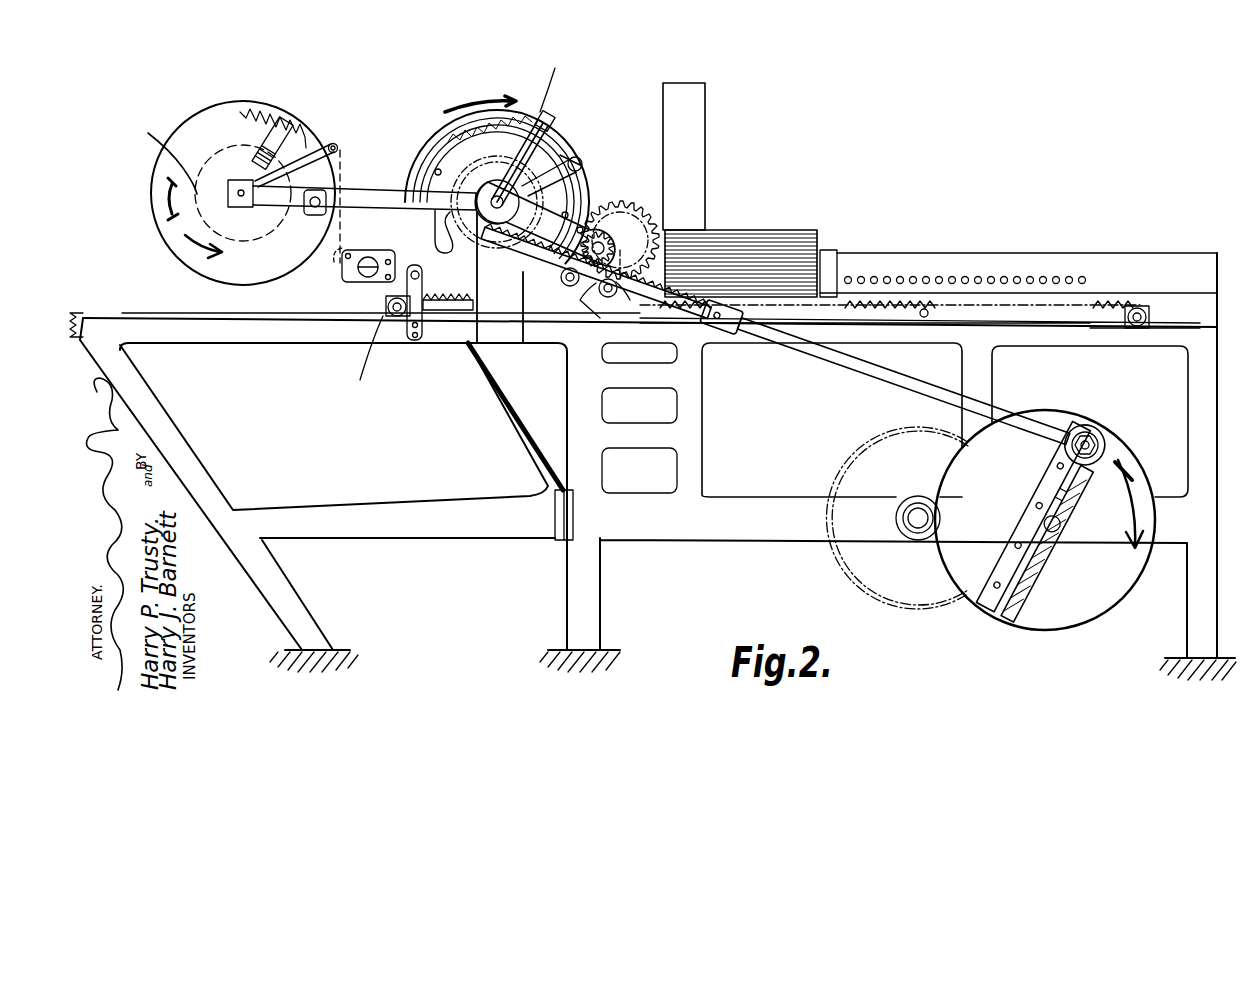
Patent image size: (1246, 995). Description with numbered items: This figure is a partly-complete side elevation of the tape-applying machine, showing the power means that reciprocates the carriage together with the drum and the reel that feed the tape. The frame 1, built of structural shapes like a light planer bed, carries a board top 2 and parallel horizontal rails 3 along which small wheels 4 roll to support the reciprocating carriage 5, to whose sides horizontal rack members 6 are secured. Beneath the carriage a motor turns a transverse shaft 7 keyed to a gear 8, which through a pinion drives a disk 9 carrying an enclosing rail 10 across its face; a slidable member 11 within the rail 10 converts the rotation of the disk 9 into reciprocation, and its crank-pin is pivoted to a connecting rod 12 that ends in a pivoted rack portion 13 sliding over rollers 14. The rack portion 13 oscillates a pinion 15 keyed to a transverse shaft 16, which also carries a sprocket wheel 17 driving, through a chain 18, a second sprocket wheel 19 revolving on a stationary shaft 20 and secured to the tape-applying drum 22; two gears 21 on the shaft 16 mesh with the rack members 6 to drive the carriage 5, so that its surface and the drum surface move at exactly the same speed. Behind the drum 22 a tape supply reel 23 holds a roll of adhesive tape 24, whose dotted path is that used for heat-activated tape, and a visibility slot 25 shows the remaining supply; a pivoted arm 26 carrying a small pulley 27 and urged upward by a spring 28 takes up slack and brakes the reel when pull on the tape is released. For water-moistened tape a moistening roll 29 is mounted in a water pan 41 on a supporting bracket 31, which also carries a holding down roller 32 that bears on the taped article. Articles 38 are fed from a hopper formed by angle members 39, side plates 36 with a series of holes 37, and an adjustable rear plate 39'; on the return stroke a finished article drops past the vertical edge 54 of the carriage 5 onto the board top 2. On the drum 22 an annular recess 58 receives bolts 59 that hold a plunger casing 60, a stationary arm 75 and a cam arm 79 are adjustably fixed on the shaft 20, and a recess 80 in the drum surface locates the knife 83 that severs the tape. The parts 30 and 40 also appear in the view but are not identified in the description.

The frame 1 is at (310, 340).
The board top 2 is at (90, 312).
The horizontal rails 3 is at (272, 312).
The small wheels 4 is at (392, 318).
The reciprocating carriage 5 is at (1148, 312).
The rack members 6 is at (1125, 305).
The transverse shaft 7 is at (925, 540).
The gear 8 is at (836, 578).
The disk 9 is at (1055, 630).
The enclosing rail 10 is at (1005, 528).
The slidable member 11 is at (1060, 500).
The connecting rod 12 is at (812, 348).
The pivoted rack portion 13 is at (603, 297).
The rollers 14 is at (566, 286).
The pinion 15 is at (622, 235).
The transverse shaft 16 is at (574, 268).
The sprocket wheel 17 is at (608, 236).
The chain 18 is at (545, 265).
The second sprocket wheel 19 is at (430, 135).
The stationary shaft 20 is at (485, 192).
The gears 21 is at (636, 222).
The tape-applying drum 22 is at (540, 120).
The tape supply reel 23 is at (200, 108).
The adhesive tape 24 is at (160, 145).
The visibility slot 25 is at (290, 120).
The pivoted arm 26 is at (330, 144).
The small pulley 27 is at (338, 148).
The spring 28 is at (258, 110).
The moistening roll 29 is at (368, 257).
The housing 30 is at (330, 266).
The supporting bracket 31 is at (416, 342).
The holding down roller 32 is at (440, 296).
The side plates 36 is at (905, 253).
The holes 37 is at (1085, 276).
The article 38 is at (762, 232).
The angle members 39 is at (713, 156).
The rear plate 39' is at (844, 254).
The rack 40 is at (830, 308).
The water pan 41 is at (382, 300).
The vertical edge 54 is at (358, 372).
The annular recess 58 is at (432, 172).
The bolts 59 is at (582, 226).
The plunger casing 60 is at (578, 165).
The stationary arm 75 is at (558, 80).
The cam arm 79 is at (466, 350).
The recess 80 is at (538, 116).
The knife 83 is at (488, 126).